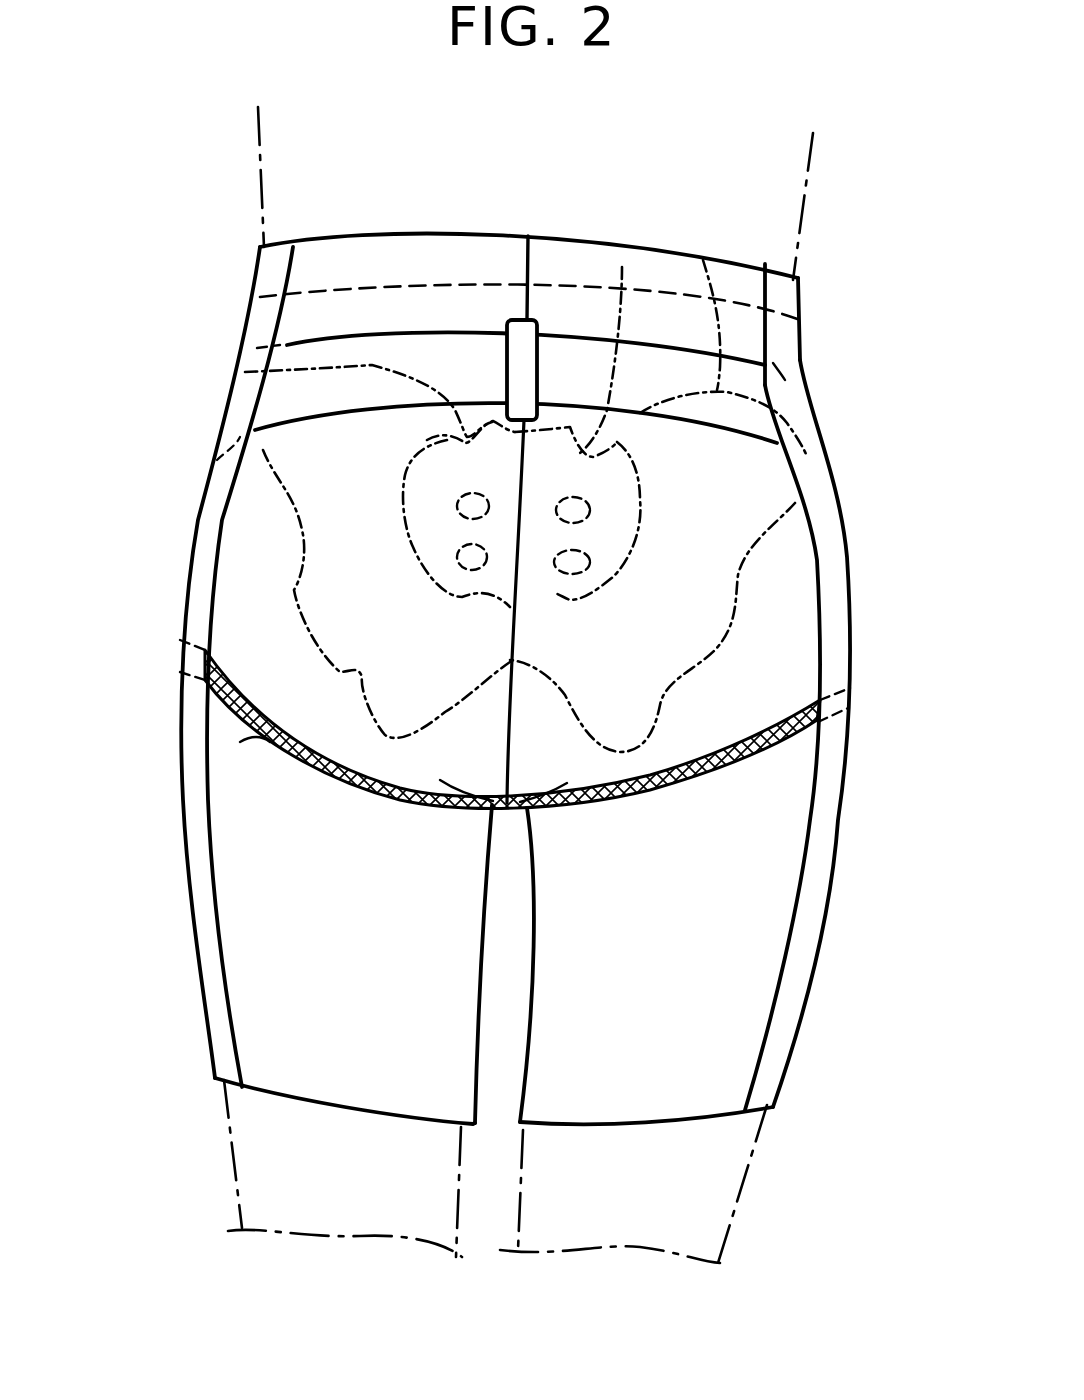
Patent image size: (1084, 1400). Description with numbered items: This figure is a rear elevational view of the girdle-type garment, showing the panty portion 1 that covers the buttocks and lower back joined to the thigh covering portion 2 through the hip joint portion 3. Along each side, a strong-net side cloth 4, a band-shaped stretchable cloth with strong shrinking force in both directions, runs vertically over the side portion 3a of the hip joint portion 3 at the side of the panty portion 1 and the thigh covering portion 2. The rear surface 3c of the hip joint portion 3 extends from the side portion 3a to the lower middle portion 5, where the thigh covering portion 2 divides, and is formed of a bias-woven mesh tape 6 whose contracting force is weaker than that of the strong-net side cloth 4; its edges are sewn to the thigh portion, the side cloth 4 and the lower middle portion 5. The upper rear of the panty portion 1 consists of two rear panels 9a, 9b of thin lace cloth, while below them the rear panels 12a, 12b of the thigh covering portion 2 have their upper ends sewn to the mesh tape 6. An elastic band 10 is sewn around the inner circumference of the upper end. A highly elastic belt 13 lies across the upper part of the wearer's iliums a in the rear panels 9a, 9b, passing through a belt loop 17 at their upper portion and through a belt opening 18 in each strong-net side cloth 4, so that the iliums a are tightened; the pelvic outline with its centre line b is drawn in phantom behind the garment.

The panty portion 1 is at (888, 659).
The thigh covering portion 2 is at (888, 722).
The hip joint portion 3 is at (888, 664).
The side portion 3a is at (180, 648).
The rear surface 3c is at (323, 767).
The strong-net side cloth 4 is at (188, 908).
The lower middle portion 5 is at (509, 805).
The mesh tape 6 is at (261, 736).
The rear panel 9a is at (246, 572).
The rear panel 9b is at (791, 573).
The elastic band 10 is at (327, 293).
The rear panel 12a is at (255, 1010).
The rear panel 12b is at (700, 1090).
The belt 13 is at (447, 333).
The belt loop 17 is at (537, 365).
The belt opening 18 is at (207, 460).
The ilium a is at (372, 365).
The sacrum center line b is at (622, 267).